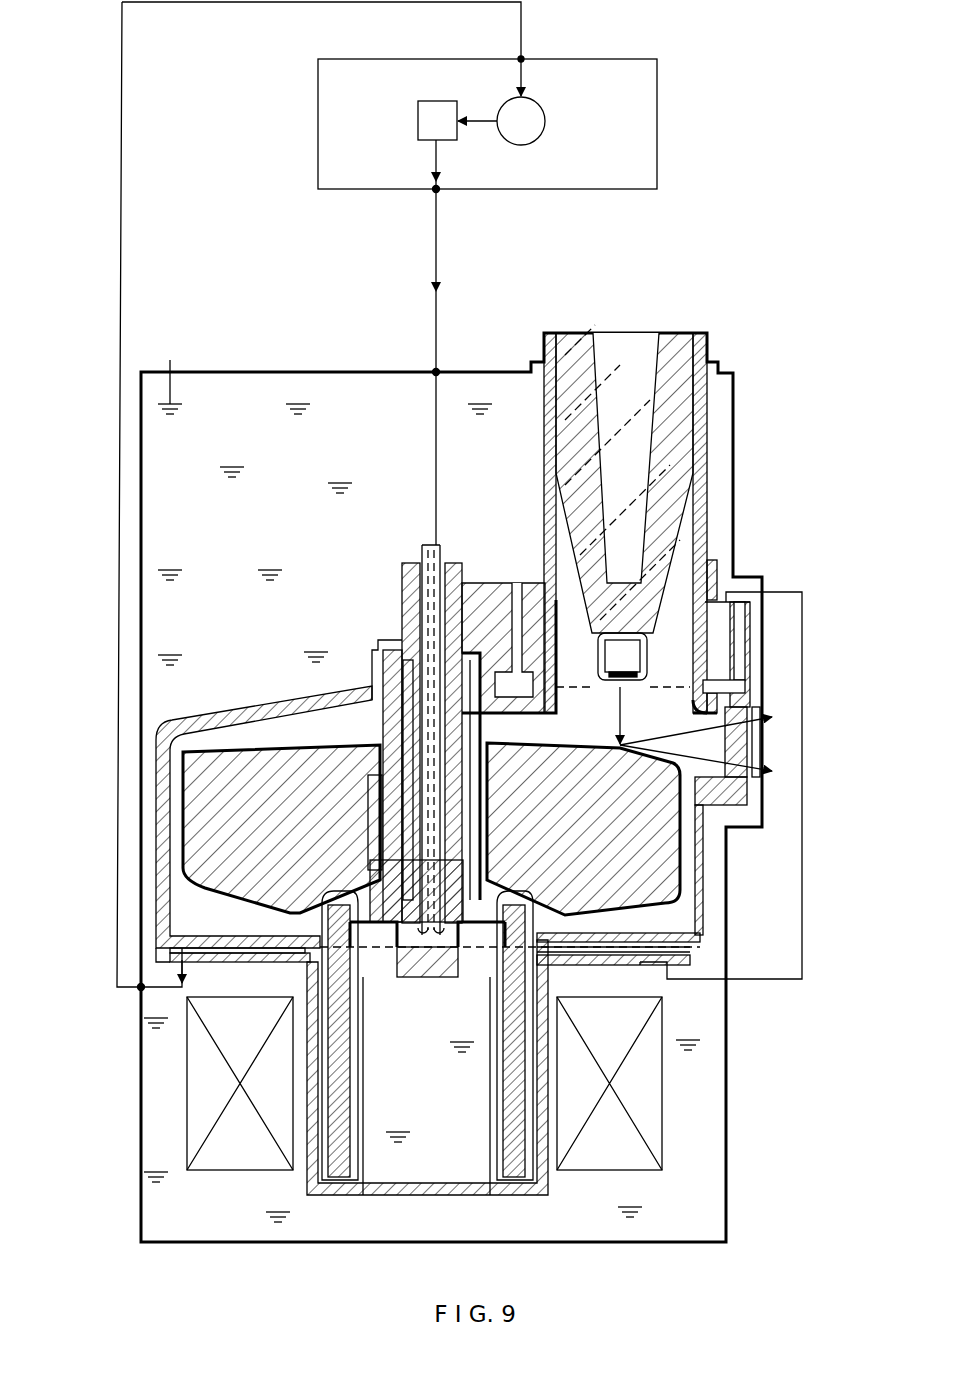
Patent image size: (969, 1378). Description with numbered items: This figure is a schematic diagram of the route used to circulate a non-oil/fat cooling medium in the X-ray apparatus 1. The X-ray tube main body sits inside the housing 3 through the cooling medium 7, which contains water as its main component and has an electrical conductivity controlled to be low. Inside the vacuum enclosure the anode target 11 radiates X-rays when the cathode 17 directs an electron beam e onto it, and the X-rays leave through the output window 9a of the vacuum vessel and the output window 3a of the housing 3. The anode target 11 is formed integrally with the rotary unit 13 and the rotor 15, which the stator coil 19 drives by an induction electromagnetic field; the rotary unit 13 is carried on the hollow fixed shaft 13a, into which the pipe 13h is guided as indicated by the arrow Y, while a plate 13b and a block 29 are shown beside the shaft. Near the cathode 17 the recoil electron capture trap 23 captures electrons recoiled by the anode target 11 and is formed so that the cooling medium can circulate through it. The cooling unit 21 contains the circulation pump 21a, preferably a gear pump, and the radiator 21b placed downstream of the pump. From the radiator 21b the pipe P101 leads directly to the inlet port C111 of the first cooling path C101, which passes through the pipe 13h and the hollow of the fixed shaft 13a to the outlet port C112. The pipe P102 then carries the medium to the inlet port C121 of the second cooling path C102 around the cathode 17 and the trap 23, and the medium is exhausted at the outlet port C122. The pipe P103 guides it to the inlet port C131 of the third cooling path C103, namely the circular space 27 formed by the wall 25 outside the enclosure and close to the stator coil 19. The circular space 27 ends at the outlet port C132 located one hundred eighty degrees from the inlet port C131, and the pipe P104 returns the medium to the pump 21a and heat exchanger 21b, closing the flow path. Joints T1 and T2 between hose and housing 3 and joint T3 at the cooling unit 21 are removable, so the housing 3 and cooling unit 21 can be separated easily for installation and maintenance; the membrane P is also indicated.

The electrostatic spray apparatus 1 is at (777, 290).
The housing 3 is at (268, 372).
The X-ray output window 3a is at (748, 733).
The cooling medium 7 is at (172, 400).
The X-ray output window 9a is at (758, 768).
The anode target 11 is at (576, 760).
The rotary unit 13 is at (369, 655).
The fixed shaft 13a is at (402, 722).
The housing side plate 13b is at (375, 810).
The pipe 13h is at (416, 890).
The rotor 15 is at (329, 1130).
The cathode 17 is at (598, 672).
The stator coil 19 is at (660, 1100).
The cooling unit 21 is at (657, 92).
The circulation pump 21a is at (545, 112).
The radiator 21b is at (440, 100).
The recoil electron capture trap 23 is at (690, 713).
The wall 25 is at (226, 962).
The circular space 27 is at (300, 962).
The side block 29 is at (735, 678).
The membrane P is at (229, 710).
The arrow Y is at (700, 979).
The electron beam e is at (622, 720).
The joint T1 is at (440, 368).
The joint T2 is at (524, 52).
The joint T3 is at (440, 193).
The pipe P101 is at (434, 421).
The pipe P102 is at (454, 566).
The pipe P103 is at (806, 917).
The pipe P104 is at (118, 457).
The first cooling path C101 is at (444, 720).
The second cooling path C102 is at (728, 693).
The third cooling path C103 is at (680, 948).
The inlet port C111 is at (424, 544).
The outlet port C112 is at (428, 576).
The inlet port C121 is at (514, 595).
The outlet port C122 is at (733, 624).
The inlet port C131 is at (672, 975).
The outlet port C132 is at (182, 968).